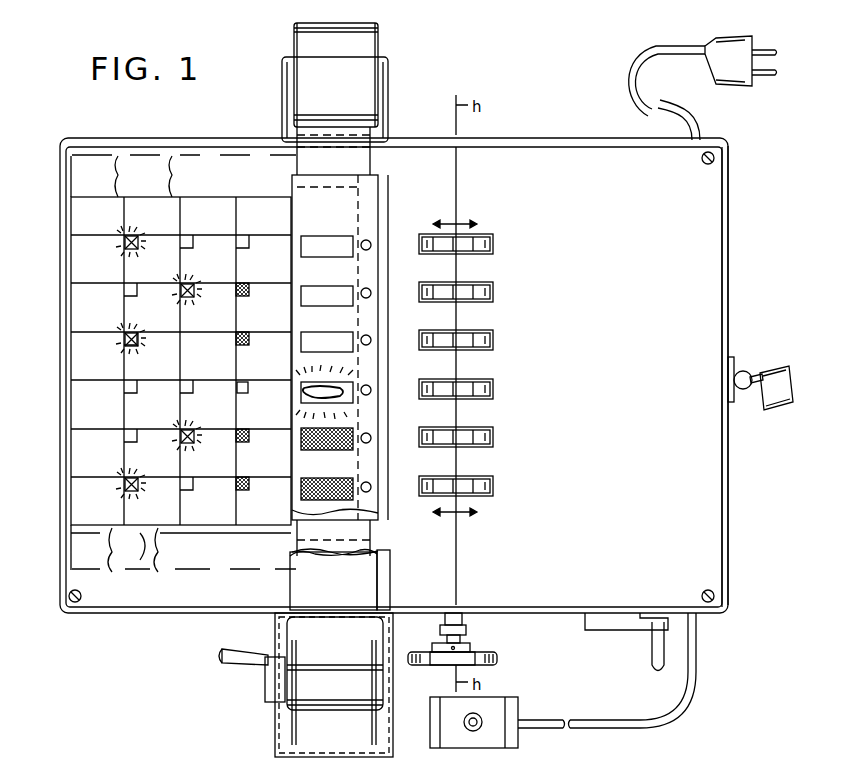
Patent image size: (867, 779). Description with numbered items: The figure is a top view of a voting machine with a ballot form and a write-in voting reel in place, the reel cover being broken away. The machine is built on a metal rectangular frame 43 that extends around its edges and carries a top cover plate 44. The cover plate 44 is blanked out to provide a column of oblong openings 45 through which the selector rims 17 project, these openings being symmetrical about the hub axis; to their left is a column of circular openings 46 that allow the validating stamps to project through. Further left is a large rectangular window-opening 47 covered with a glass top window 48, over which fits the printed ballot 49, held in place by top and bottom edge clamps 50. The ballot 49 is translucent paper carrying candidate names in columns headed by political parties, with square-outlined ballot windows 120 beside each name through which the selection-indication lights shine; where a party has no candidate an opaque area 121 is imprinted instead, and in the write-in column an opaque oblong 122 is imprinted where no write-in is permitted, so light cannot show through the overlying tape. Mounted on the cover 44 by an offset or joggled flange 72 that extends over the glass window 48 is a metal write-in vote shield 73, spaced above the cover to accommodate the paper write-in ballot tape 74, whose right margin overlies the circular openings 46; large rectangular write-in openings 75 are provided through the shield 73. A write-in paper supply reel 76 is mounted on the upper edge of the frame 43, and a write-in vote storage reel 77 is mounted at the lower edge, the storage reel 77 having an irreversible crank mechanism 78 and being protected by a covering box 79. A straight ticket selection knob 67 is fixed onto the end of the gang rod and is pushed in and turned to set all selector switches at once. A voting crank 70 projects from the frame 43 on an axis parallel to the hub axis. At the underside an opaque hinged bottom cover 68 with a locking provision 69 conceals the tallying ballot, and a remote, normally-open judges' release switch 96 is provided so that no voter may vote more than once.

The selector rims 17 is at (500, 508).
The metal rectangular frame 43 is at (572, 140).
The top cover plate 44 is at (668, 372).
The oblong openings 45 is at (490, 332).
The circular openings 46 is at (372, 248).
The rectangular window-opening 47 is at (352, 170).
The glass top window 48 is at (132, 570).
The printed ballot 49 is at (88, 438).
The edge clamps 50 is at (76, 168).
The straight ticket selection knob 67 is at (497, 659).
The hinged bottom cover 68 is at (728, 490).
The locking provision 69 is at (772, 410).
The voting crank 70 is at (652, 660).
The joggled flange 72 is at (385, 585).
The write-in vote shield 73 is at (312, 592).
The write-in ballot tape 74 is at (344, 83).
The write-in openings 75 is at (301, 298).
The write-in paper supply reel 76 is at (380, 34).
The write-in vote storage reel 77 is at (297, 731).
The irreversible crank mechanism 78 is at (230, 665).
The covering box 79 is at (280, 739).
The judges' release switch 96 is at (483, 740).
The ballot windows 120 is at (186, 338).
The opaque area 121 is at (249, 438).
The opaque oblong 122 is at (343, 455).